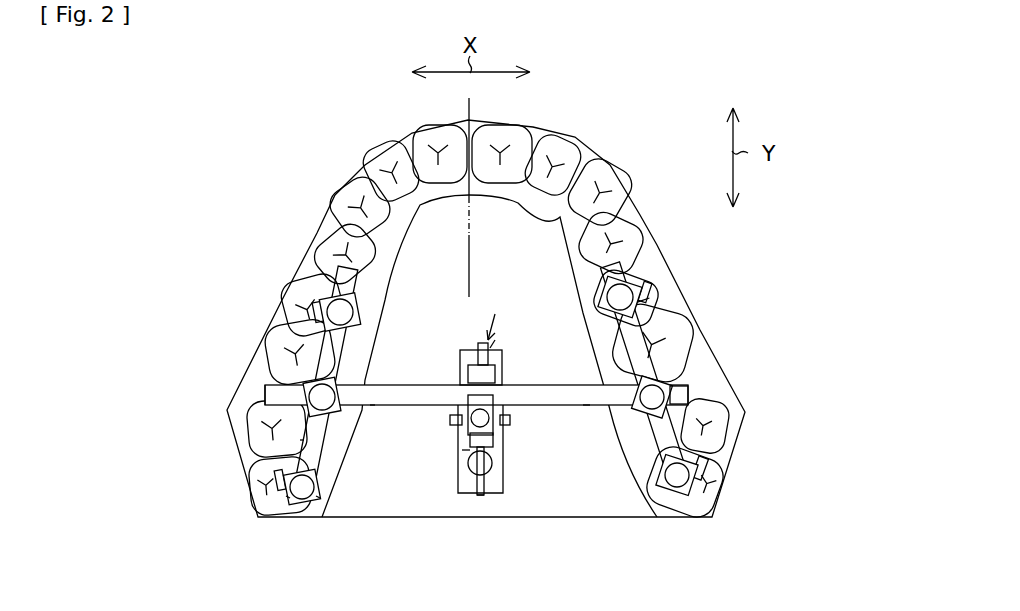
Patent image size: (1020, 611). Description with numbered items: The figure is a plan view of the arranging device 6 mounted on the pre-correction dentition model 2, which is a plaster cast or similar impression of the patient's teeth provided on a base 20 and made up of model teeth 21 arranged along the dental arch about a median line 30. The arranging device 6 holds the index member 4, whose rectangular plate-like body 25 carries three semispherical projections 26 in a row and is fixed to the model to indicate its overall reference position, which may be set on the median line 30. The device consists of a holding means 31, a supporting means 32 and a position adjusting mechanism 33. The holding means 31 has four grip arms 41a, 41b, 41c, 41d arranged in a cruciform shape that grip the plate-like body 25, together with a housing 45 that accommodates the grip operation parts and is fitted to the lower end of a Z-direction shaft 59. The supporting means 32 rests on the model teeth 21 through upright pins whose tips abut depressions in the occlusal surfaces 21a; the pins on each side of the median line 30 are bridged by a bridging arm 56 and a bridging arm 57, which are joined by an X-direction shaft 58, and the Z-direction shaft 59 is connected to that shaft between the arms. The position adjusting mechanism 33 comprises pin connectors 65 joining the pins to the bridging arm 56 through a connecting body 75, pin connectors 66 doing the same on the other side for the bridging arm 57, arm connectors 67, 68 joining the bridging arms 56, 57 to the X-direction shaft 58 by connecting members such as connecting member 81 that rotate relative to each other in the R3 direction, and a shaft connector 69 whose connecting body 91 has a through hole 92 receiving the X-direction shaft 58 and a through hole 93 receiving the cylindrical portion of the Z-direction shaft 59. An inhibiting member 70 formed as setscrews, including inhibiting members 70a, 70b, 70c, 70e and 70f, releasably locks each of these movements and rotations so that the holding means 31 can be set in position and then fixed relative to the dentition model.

The pre-correction dentition model 2 is at (356, 160).
The base 20 is at (600, 512).
The model teeth 21 is at (560, 140).
The occlusal surface 21a is at (318, 318).
The median line 30 is at (478, 250).
The holding means 31 is at (493, 315).
The supporting means 32 is at (373, 407).
The position adjusting mechanism 33 is at (355, 300).
The index member 4 is at (458, 505).
The grip arm 41a is at (454, 420).
The grip arm 41b is at (511, 420).
The grip arm 41c is at (480, 498).
The grip arm 41d is at (480, 341).
The housing 45 is at (505, 438).
The plate-like body 25 is at (484, 493).
The semispherical projections 26 is at (492, 463).
The bridging arm 56 is at (316, 445).
The bridging arm 57 is at (660, 437).
The X-direction shaft 58 is at (586, 407).
The Z-direction shaft 59 is at (457, 438).
The arranging device 6 is at (262, 386).
The pin connector 65 is at (360, 318).
The pin connector 66 is at (607, 308).
The arm connector 67 is at (345, 392).
The arm connector 68 is at (620, 374).
The shaft connector 69 is at (461, 379).
The inhibiting member 70 is at (288, 502).
The inhibiting member 70a is at (333, 262).
The inhibiting member 70b is at (316, 290).
The inhibiting member 70c is at (300, 437).
The inhibiting member 70e is at (497, 340).
The inhibiting member 70f is at (467, 453).
The connecting body 75 is at (362, 298).
The connecting member 81 is at (260, 447).
The connecting body 91 is at (503, 366).
The through hole 92 is at (507, 397).
The through hole 93 is at (465, 440).
The R3 direction R3 is at (264, 392).